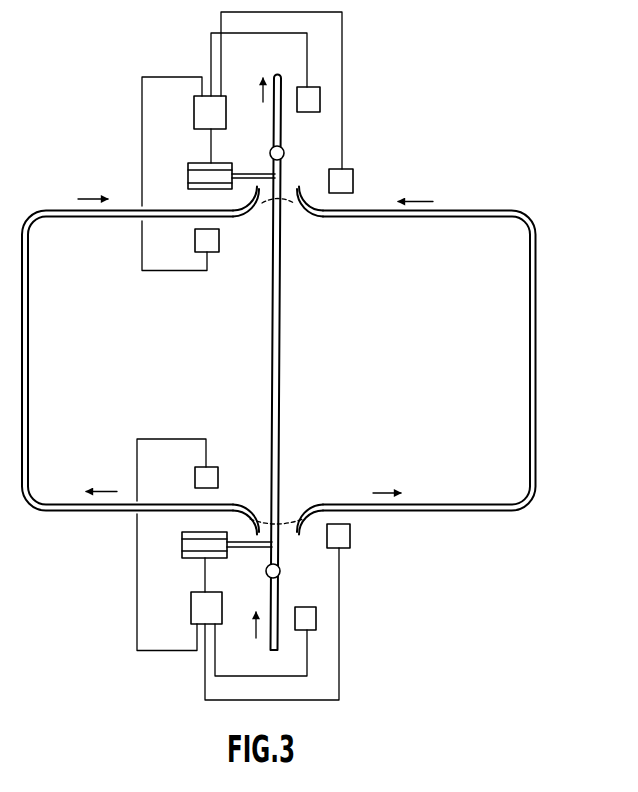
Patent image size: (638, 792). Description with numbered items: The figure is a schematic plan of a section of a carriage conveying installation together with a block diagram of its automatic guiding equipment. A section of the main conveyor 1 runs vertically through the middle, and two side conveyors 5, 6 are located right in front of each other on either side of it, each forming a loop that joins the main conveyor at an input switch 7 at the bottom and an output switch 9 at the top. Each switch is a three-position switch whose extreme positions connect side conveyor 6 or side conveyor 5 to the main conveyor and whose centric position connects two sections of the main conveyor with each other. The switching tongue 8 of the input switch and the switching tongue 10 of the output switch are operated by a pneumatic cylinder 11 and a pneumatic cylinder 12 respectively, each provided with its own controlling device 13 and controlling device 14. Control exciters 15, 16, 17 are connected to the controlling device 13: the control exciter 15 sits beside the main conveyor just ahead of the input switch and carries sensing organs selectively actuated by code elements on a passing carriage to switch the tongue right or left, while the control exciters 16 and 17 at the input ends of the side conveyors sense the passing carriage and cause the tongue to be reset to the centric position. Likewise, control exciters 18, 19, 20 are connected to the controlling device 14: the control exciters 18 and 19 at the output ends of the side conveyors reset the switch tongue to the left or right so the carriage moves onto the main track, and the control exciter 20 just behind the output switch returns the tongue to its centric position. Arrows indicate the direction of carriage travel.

The main conveyor 1 is at (281, 354).
The side conveyor 5 is at (29, 354).
The side conveyor 6 is at (530, 357).
The input switch 7 is at (280, 573).
The switching tongue 8 is at (279, 544).
The output switch 9 is at (284, 152).
The switching tongue 10 is at (282, 171).
The pneumatic cylinder 11 is at (190, 545).
The pneumatic cylinder 12 is at (188, 173).
The controlling device 13 is at (192, 607).
The controlling device 14 is at (194, 117).
The control exciter 15 is at (310, 615).
The control exciter 16 is at (218, 470).
The control exciter 17 is at (345, 535).
The control exciter 18 is at (219, 243).
The control exciter 19 is at (353, 181).
The control exciter 20 is at (320, 97).